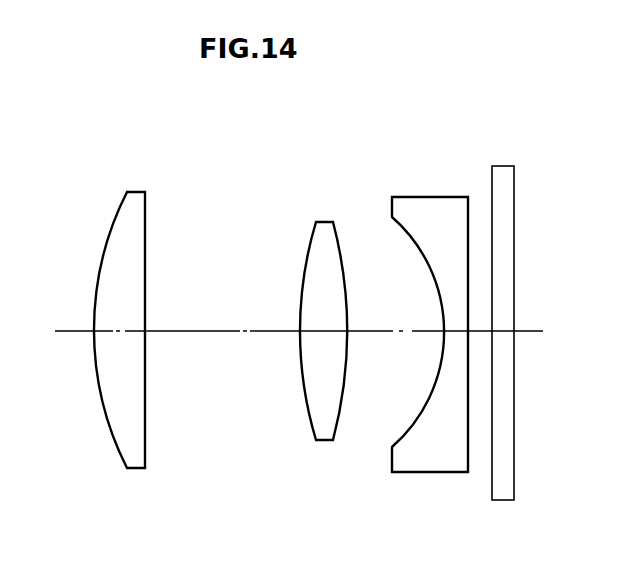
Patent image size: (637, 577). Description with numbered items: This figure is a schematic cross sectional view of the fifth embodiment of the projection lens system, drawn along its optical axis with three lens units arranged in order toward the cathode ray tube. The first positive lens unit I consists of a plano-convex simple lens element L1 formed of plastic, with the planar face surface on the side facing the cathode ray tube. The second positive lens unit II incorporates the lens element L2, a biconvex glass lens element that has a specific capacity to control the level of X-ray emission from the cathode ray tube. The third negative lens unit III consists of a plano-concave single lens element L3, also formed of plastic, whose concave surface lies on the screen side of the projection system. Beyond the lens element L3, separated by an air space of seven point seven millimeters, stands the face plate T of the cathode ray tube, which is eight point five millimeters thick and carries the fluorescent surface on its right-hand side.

The first positive lens unit I is at (99, 180).
The second positive lens unit II is at (294, 182).
The third negative lens unit III is at (376, 181).
The plano-convex simple lens element L1 is at (136, 452).
The biconvex glass lens element L2 is at (314, 439).
The plano-concave single lens element L3 is at (415, 461).
The face plate T is at (508, 495).